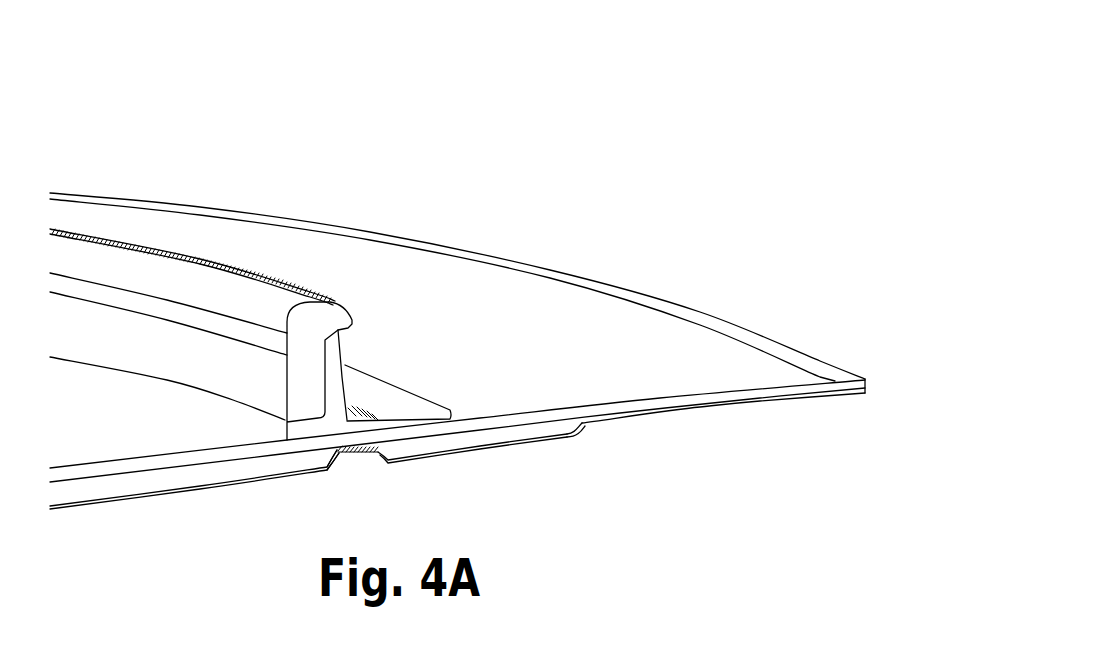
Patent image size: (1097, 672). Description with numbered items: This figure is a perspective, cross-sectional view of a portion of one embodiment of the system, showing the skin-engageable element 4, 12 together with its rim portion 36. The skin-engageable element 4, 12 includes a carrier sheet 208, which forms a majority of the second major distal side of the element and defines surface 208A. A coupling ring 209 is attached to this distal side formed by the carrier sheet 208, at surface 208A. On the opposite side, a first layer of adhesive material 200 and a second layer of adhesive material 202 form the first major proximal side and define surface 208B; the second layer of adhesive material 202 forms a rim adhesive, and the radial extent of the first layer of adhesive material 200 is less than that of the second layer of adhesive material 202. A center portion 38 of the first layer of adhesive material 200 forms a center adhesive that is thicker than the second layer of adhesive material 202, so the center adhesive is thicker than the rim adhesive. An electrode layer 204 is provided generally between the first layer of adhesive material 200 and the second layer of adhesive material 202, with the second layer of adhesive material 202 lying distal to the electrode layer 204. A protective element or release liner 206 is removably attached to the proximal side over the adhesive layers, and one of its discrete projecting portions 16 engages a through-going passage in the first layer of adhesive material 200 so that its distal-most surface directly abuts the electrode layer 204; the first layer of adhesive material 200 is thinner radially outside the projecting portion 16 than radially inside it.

The skin-engageable element 4 is at (848, 90).
The skin-engageable element 12 is at (848, 86).
The projecting portion 16 is at (377, 450).
The rim portion 36 is at (675, 352).
The center portion 38 is at (110, 438).
The first layer of adhesive material 200 is at (175, 483).
The second layer of adhesive material 202 is at (603, 410).
The electrode layer 204 is at (413, 437).
The release liner 206 is at (555, 440).
The carrier sheet 208 is at (770, 363).
The surface 208A is at (613, 329).
The surface 208B is at (750, 408).
The coupling ring 209 is at (250, 297).